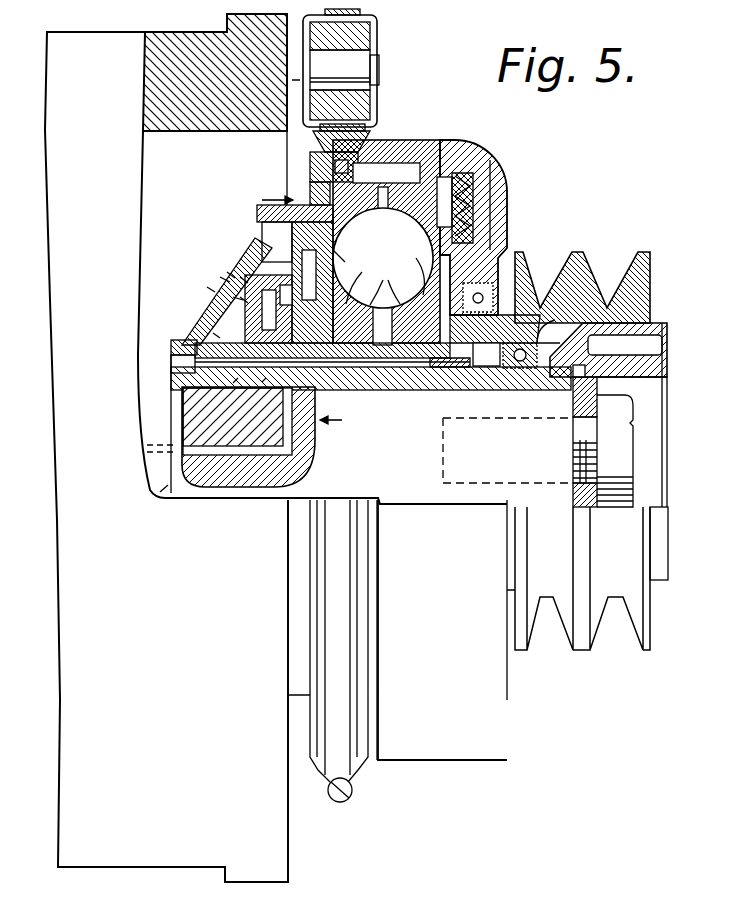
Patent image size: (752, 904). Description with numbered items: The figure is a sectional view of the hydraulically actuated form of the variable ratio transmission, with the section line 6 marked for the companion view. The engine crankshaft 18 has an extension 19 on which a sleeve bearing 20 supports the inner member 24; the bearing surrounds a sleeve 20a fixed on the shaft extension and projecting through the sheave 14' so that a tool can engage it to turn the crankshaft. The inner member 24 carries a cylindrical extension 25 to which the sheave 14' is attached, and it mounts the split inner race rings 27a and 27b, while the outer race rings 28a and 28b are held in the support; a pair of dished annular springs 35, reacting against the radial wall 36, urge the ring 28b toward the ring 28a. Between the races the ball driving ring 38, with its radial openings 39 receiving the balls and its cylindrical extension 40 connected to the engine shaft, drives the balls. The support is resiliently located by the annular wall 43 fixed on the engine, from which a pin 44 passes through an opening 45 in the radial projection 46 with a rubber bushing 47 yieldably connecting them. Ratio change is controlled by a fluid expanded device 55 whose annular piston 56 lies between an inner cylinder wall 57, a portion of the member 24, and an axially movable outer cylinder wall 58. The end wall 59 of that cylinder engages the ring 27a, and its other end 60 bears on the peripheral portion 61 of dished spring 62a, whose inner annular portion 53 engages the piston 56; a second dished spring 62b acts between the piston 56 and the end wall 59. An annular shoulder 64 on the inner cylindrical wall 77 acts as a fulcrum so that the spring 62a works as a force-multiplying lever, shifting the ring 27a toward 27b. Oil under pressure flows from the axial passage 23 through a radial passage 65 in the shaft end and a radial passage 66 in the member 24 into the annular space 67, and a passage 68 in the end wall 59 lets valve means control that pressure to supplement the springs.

The sheave 14' is at (578, 461).
The engine crankshaft 18 is at (198, 490).
The extension 19 is at (414, 488).
The sleeve bearing 20 is at (463, 363).
The sleeve 20a is at (522, 368).
The oil passage 23 is at (168, 485).
The inner member 24 is at (382, 352).
The cylindrical extension 25 is at (510, 325).
The inner race ring 27a is at (352, 332).
The inner race ring 27b is at (438, 345).
The outer race ring 28a is at (310, 177).
The outer race ring 28b is at (420, 163).
The dished annular spring 35 is at (496, 166).
The radial wall 36 is at (487, 211).
The ball driving ring 38 is at (330, 275).
The radial openings 39 is at (427, 238).
The cylindrical extension 40 is at (207, 287).
The annular wall 43 is at (197, 112).
The pin 44 is at (358, 72).
The opening 45 is at (365, 112).
The radial projection 46 is at (377, 15).
The rubber bushing 47 is at (365, 42).
The inner annular portion 53 is at (183, 343).
The fluid expanded device 55 is at (240, 277).
The annular piston 56 is at (213, 333).
The inner cylinder wall 57 is at (233, 383).
The outer cylinder wall 58 is at (327, 275).
The annular end wall 59 is at (312, 320).
The other end 60 is at (240, 273).
The peripheral portion 61 is at (227, 272).
The dished annular spring 62a is at (233, 297).
The dished annular spring 62b is at (307, 275).
The annular shoulder 64 is at (220, 277).
The radial passage 65 is at (287, 440).
The radial passage 66 is at (278, 407).
The annular space 67 is at (262, 382).
The passage 68 is at (333, 263).
The inner cylindrical wall 77 is at (240, 297).
The section line 6 is at (314, 310).